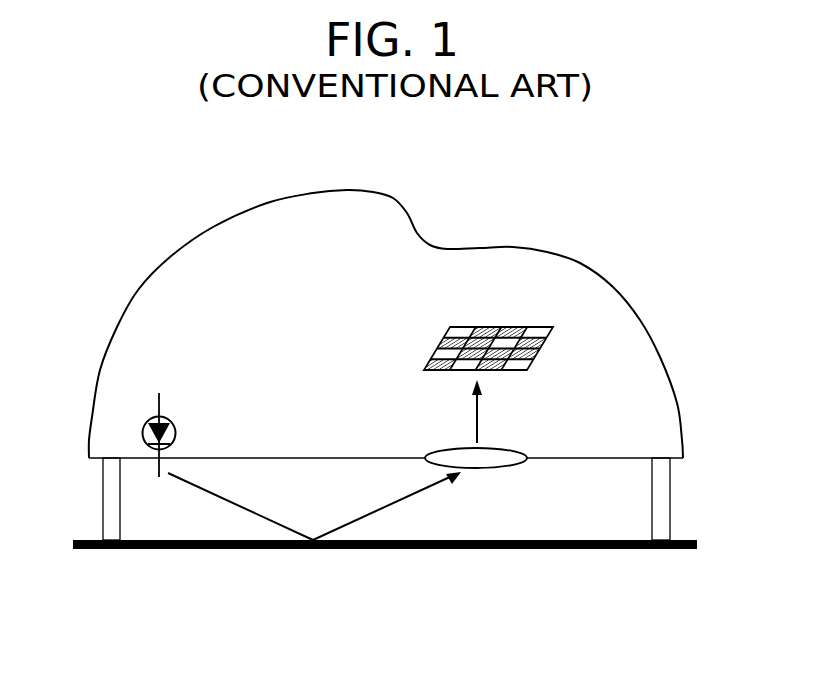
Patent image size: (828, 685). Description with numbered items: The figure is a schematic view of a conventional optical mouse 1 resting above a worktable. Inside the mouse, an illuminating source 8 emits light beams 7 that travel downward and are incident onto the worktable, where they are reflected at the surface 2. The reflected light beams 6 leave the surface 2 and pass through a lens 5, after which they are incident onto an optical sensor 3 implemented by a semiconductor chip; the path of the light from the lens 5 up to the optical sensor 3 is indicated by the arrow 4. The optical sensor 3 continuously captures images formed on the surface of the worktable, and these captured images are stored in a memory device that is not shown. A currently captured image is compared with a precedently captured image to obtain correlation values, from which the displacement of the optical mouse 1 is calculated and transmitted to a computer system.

The optical mouse 1 is at (622, 295).
The surface 2 is at (487, 550).
The optical sensor 3 is at (510, 323).
The reflected light to sensor 4 is at (473, 402).
The lens 5 is at (515, 450).
The reflected light beams 6 is at (370, 513).
The light beams 7 is at (247, 502).
The illuminating source 8 is at (177, 435).